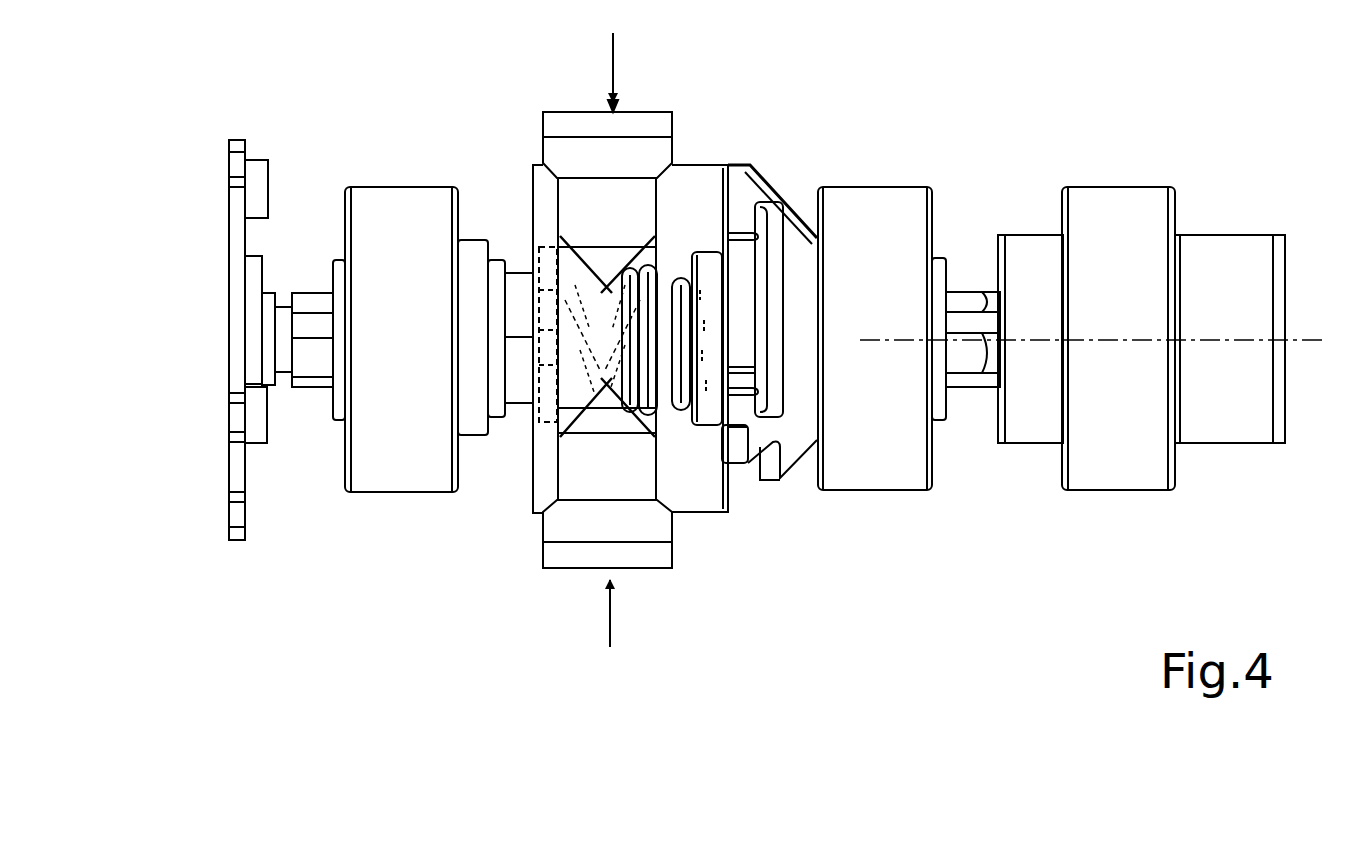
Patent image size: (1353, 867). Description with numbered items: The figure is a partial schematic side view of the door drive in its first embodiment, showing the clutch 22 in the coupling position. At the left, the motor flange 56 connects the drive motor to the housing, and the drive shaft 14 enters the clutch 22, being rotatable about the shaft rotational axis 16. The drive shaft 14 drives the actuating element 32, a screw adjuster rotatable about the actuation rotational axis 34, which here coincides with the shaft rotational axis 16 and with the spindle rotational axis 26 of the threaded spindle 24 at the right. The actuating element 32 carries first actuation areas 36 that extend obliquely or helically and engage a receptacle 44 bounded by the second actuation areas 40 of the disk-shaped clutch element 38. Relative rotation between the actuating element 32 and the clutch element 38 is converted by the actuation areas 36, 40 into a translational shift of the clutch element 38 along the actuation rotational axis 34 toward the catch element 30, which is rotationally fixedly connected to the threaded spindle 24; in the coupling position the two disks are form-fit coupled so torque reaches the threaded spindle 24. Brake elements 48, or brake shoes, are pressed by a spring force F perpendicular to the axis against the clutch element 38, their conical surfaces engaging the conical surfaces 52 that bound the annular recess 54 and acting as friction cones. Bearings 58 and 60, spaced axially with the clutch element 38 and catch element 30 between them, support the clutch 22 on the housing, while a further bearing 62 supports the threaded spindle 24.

The drive shaft 14 is at (282, 323).
The shaft rotational axis 16 is at (1106, 261).
The clutch 22 is at (752, 160).
The threaded spindle 24 is at (952, 357).
The spindle rotational axis 26 is at (1106, 261).
The catch element 30 is at (796, 238).
The actuating element 32 is at (520, 363).
The actuation rotational axis 34 is at (1314, 340).
The first actuation areas 36 is at (532, 270).
The clutch element 38 is at (692, 180).
The second actuation areas 40 is at (605, 247).
The receptacle 44 is at (525, 328).
The brake elements 48 is at (573, 125).
The conical second surfaces 52 is at (593, 273).
The recess 54 is at (625, 350).
The motor flange 56 is at (237, 231).
The bearing 58 is at (390, 233).
The bearing 60 is at (887, 457).
The further bearing 62 is at (1110, 215).
The force F is at (615, 65).